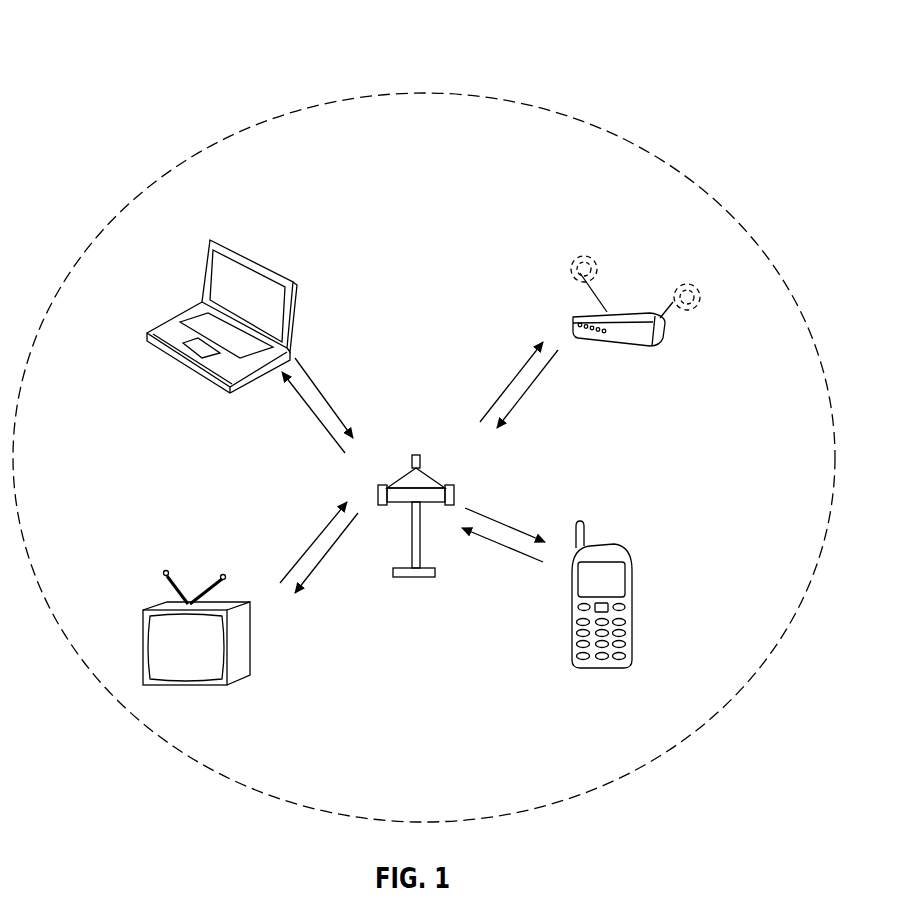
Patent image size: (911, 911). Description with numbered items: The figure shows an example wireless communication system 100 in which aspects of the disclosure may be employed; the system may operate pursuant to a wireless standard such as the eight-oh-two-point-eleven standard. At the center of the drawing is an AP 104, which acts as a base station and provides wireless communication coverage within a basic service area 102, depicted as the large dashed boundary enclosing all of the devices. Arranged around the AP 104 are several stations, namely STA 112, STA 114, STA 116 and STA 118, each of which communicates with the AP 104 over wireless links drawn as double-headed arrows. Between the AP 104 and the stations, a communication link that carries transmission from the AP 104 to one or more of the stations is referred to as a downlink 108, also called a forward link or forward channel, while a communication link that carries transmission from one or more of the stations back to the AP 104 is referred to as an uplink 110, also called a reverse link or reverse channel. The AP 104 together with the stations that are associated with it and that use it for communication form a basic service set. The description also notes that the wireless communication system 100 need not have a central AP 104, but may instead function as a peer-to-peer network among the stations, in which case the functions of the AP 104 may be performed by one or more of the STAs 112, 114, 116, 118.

The wireless communication system 100 is at (135, 53).
The basic service area 102 is at (422, 94).
The AP 104 is at (415, 455).
The downlink 108 is at (505, 525).
The uplink 110 is at (523, 553).
The STA 112 is at (610, 312).
The STA 114 is at (598, 543).
The STA 116 is at (222, 240).
The STA 118 is at (165, 607).